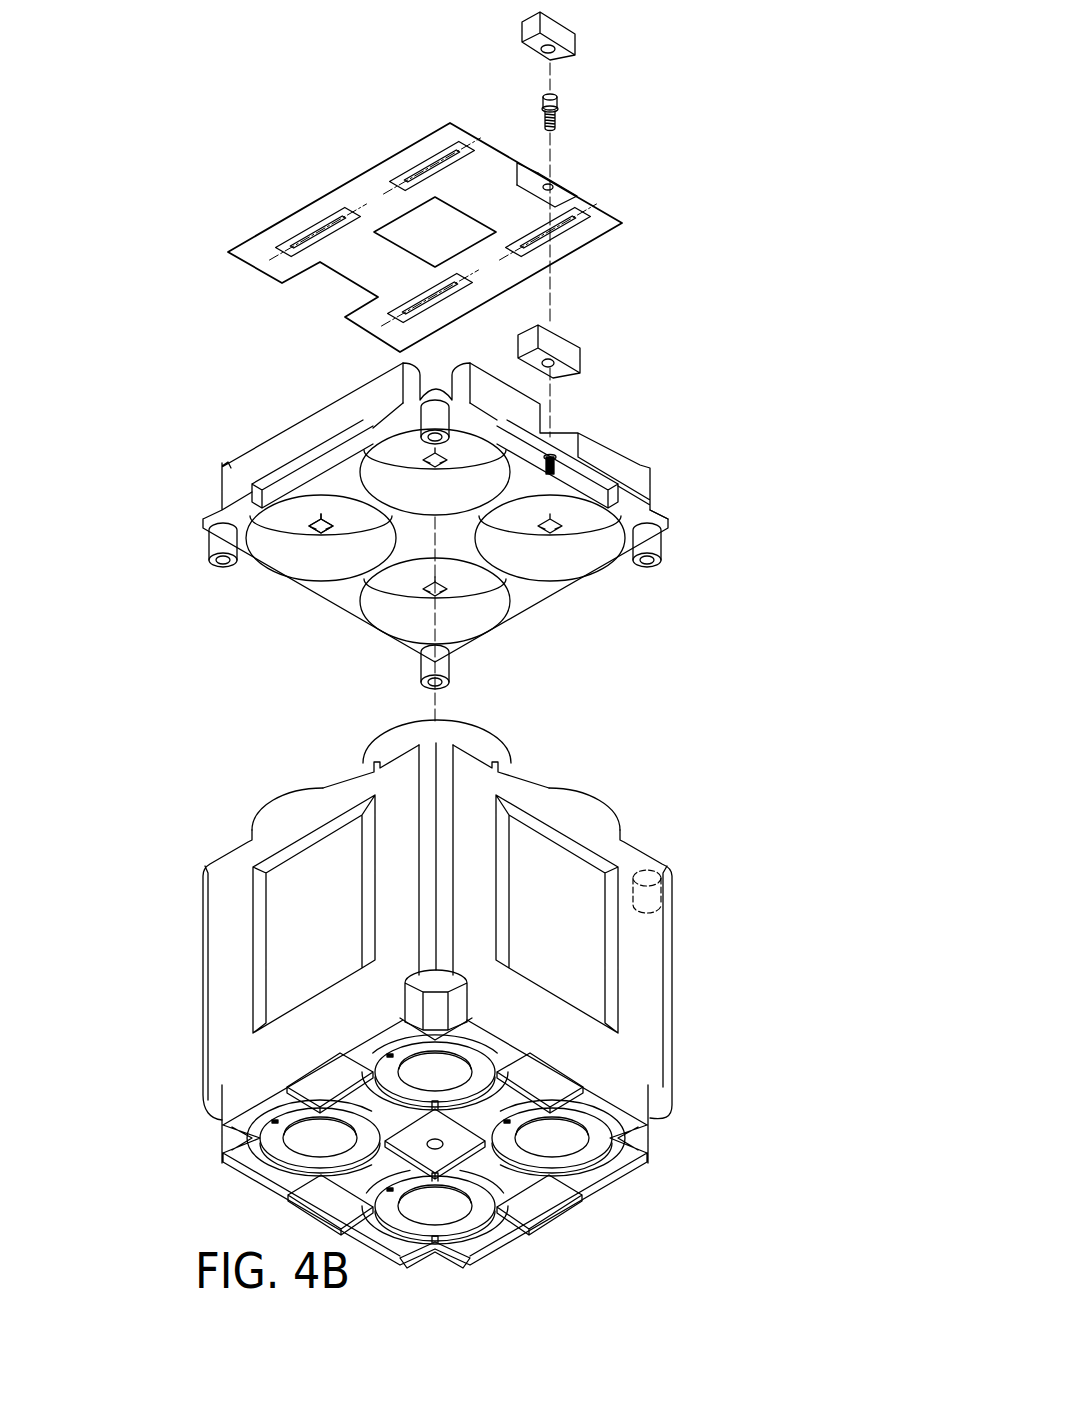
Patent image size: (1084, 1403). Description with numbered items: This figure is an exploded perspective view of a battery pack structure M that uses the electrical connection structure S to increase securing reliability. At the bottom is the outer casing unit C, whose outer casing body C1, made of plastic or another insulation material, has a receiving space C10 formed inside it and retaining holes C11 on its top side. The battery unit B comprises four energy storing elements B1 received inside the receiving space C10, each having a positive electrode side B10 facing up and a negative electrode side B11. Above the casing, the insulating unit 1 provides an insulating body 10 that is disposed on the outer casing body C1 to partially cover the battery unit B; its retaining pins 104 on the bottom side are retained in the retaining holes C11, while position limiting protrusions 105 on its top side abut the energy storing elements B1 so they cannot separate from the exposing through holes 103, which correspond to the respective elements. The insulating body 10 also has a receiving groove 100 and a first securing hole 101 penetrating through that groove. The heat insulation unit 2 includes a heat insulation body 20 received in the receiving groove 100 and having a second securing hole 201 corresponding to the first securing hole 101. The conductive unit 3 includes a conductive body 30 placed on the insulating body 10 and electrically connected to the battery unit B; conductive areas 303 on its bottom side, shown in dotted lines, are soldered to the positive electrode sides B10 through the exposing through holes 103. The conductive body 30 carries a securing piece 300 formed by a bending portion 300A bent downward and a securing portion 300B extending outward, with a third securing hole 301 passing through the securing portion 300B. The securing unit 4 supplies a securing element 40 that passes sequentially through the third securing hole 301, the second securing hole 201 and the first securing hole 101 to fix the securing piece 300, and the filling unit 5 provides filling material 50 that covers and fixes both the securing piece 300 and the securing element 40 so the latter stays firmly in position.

The battery pack structure M is at (136, 35).
The electrical connection structure S is at (224, 314).
The filling unit 5 is at (601, 36).
The filling material 50 is at (568, 40).
The securing unit 4 is at (604, 109).
The securing element 40 is at (557, 100).
The conductive unit 3 is at (475, 238).
The conductive body 30 is at (592, 228).
The conductive area 303 is at (430, 154).
The third securing hole 301 is at (538, 195).
The securing piece 300 is at (626, 173).
The bending portion 300A is at (527, 172).
The securing portion 300B is at (572, 182).
The heat insulation unit 2 is at (590, 368).
The heat insulation body 20 is at (563, 333).
The second securing hole 201 is at (552, 368).
The insulating unit 1 is at (482, 526).
The insulating body 10 is at (640, 494).
The receiving groove 100 is at (572, 456).
The first securing hole 101 is at (555, 466).
The exposing through hole 103 is at (571, 550).
The retaining pin 104 is at (652, 546).
The position limiting protrusion 105 is at (428, 600).
The battery unit B is at (484, 982).
The energy storing element B1 is at (604, 815).
The positive electrode side B10 is at (577, 790).
The negative electrode side B11 is at (572, 1142).
The outer casing unit C is at (488, 1005).
The outer casing body C1 is at (641, 1033).
The receiving space C10 is at (590, 988).
The retaining hole C11 is at (663, 892).